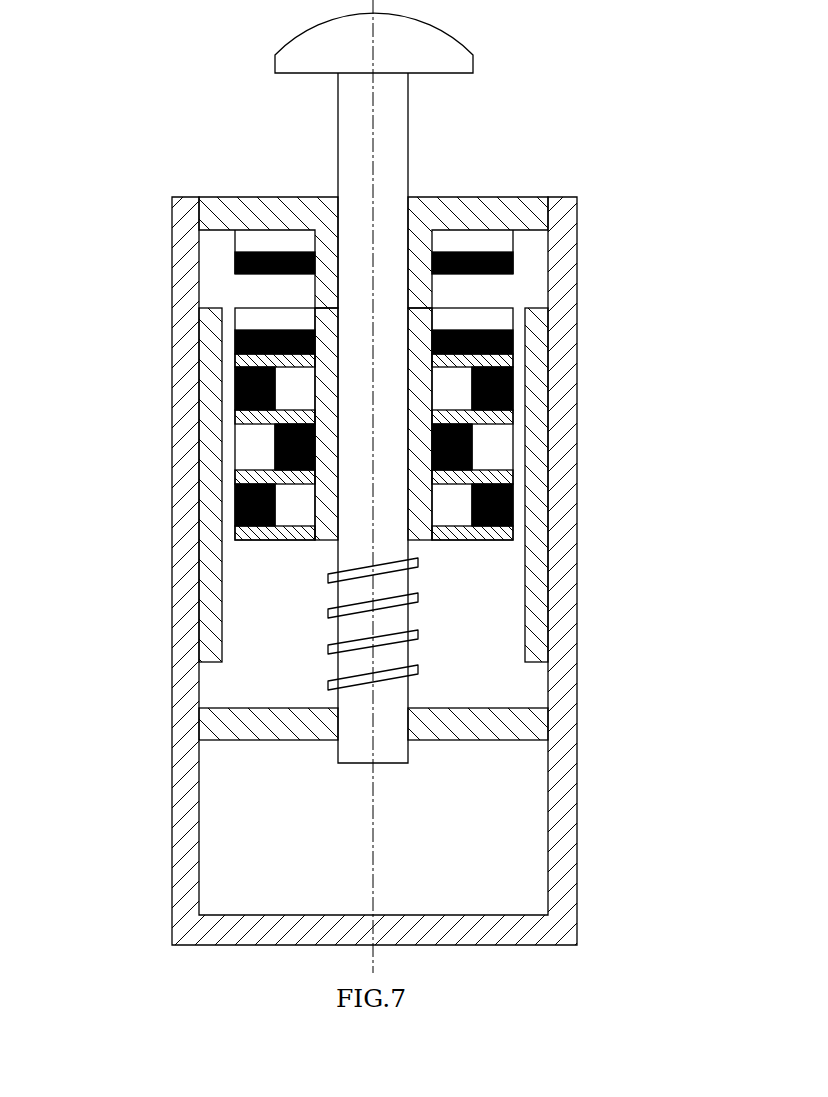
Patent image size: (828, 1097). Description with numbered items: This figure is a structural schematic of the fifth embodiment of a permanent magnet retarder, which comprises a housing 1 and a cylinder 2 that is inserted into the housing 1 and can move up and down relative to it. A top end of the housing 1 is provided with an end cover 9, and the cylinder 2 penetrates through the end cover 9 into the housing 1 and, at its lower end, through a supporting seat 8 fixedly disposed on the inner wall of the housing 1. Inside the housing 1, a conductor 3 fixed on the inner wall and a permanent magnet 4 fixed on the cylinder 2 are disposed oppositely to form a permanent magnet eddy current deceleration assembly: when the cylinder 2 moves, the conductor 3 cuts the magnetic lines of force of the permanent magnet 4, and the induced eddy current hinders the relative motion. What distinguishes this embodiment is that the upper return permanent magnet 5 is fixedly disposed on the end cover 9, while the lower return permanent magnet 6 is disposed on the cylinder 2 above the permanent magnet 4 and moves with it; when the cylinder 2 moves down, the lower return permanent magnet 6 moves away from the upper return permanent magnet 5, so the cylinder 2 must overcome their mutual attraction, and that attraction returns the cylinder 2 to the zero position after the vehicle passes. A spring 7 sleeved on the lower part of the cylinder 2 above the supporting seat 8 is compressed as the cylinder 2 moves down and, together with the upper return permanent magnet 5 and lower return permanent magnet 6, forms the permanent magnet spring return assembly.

The housing 1 is at (180, 688).
The cylinder 2 is at (392, 159).
The conductor 3 is at (213, 362).
The permanent magnet 4 is at (270, 450).
The upper return permanent magnet 5 is at (515, 258).
The lower return permanent magnet 6 is at (497, 327).
The spring 7 is at (340, 612).
The supporting seat 8 is at (538, 722).
The end cover 9 is at (505, 212).